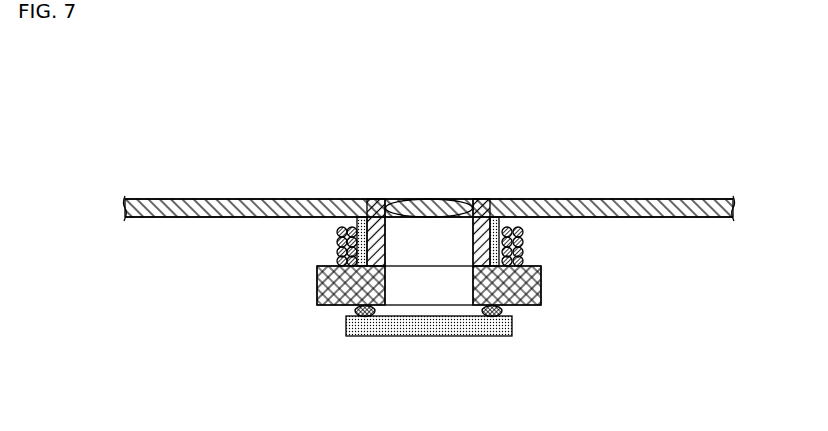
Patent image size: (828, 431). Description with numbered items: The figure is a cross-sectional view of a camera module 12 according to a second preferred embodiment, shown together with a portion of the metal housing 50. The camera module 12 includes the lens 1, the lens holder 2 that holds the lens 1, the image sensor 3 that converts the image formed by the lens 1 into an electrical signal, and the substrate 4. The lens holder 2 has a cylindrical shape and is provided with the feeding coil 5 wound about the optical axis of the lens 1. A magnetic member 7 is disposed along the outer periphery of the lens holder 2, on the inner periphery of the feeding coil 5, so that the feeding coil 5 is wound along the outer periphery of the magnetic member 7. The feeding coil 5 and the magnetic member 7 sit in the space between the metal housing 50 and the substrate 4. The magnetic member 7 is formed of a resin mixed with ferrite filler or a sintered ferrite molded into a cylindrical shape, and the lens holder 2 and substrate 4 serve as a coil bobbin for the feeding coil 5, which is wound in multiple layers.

The lens 1 is at (430, 208).
The lens holder 2 is at (478, 203).
The image sensor 3 is at (428, 336).
The substrate 4 is at (540, 284).
The feeding coil 5 is at (523, 240).
The magnetic member 7 is at (495, 212).
The camera module 12 is at (563, 333).
The metal housing 50 is at (617, 205).